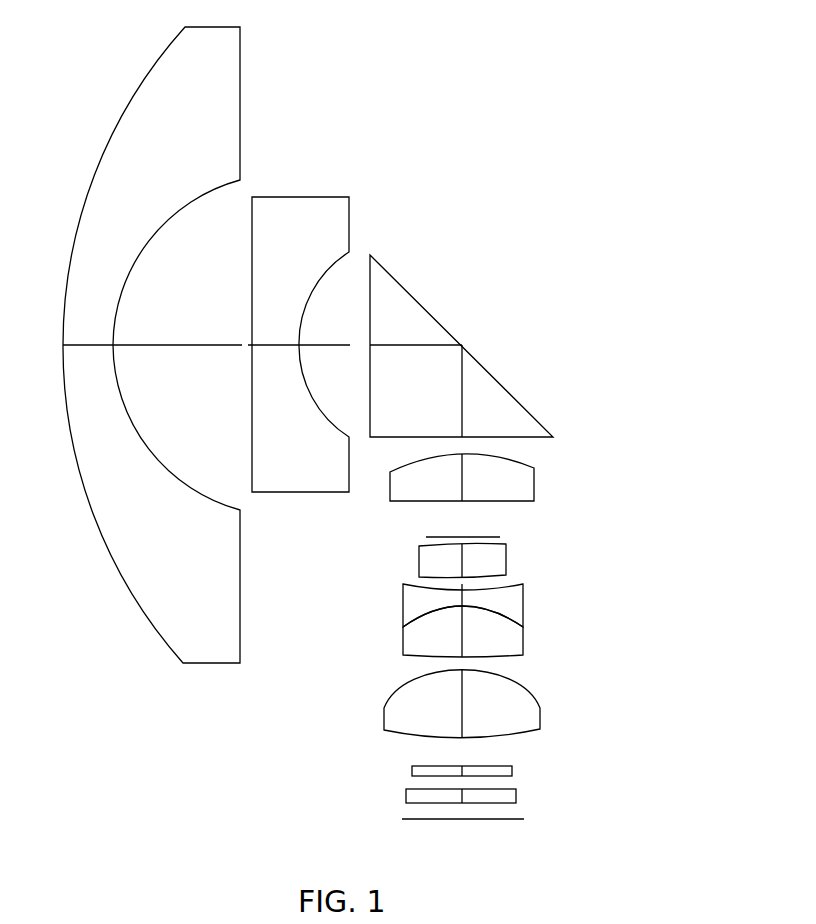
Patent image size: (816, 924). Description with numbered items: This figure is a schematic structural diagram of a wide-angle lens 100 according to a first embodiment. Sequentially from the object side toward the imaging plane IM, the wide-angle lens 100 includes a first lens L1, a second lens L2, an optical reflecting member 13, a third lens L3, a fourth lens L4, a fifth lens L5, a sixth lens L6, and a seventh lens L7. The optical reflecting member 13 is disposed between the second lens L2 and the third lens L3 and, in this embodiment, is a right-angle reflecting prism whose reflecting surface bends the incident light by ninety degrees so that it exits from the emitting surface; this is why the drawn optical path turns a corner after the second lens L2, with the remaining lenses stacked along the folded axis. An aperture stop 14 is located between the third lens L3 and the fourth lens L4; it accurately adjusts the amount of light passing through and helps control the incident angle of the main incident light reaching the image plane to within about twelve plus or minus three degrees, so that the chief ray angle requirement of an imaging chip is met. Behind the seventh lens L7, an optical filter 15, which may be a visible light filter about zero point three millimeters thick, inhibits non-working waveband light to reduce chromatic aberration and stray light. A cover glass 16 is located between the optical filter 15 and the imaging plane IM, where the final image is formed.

The wide-angle lens 100 is at (543, 138).
The first lens L1 is at (122, 533).
The second lens L2 is at (322, 472).
The optical reflecting member 13 is at (518, 418).
The third lens L3 is at (525, 485).
The aperture stop 14 is at (503, 538).
The fourth lens L4 is at (502, 560).
The fifth lens L5 is at (508, 604).
The sixth lens L6 is at (508, 643).
The seventh lens L7 is at (518, 721).
The optical filter 15 is at (512, 776).
The cover glass 16 is at (516, 803).
The imaging plane IM is at (510, 826).